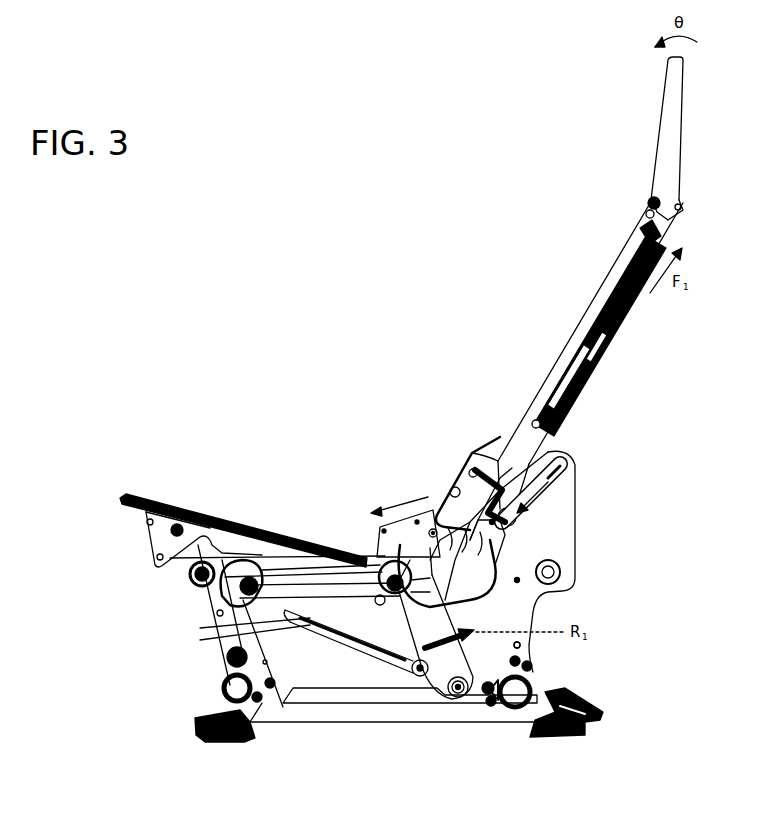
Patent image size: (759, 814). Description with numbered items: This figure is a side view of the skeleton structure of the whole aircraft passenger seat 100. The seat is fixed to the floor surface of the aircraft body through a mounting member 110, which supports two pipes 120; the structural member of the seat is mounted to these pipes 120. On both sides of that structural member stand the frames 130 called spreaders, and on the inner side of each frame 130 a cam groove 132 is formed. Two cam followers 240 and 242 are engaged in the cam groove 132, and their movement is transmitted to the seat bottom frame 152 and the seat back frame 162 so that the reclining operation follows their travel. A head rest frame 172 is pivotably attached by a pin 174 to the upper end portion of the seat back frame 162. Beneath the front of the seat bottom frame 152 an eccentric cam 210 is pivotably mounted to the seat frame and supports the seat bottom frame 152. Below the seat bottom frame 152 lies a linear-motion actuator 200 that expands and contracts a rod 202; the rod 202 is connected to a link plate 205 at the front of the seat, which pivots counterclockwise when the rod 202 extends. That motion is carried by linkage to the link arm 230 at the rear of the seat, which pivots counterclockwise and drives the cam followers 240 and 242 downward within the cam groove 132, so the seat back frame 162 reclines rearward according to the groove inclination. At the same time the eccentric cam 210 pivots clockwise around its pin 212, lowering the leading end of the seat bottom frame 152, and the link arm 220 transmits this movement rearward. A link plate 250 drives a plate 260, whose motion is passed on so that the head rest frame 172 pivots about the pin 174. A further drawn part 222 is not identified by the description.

The aircraft passenger seat 100 is at (398, 282).
The mounting member 110 is at (222, 742).
The pipes 120 is at (220, 683).
The frames (spreaders) 130 is at (567, 548).
The cam grooves 132 is at (562, 456).
The seat bottom frame 152 is at (255, 520).
The seat back frame 162 is at (566, 352).
The head rest frame 172 is at (672, 90).
The pin 174 is at (650, 200).
The actuator 200 is at (347, 650).
The rod 202 is at (252, 584).
The link plate 205 is at (207, 603).
The eccentric cam 210 is at (213, 592).
The pin 212 is at (272, 578).
The link arm 220 is at (237, 630).
The connecting rod 222 is at (385, 575).
The link arm 230 is at (445, 690).
The cam follower 240 is at (398, 540).
The cam follower 242 is at (577, 466).
The link plate 250 is at (478, 553).
The plate 260 is at (468, 488).